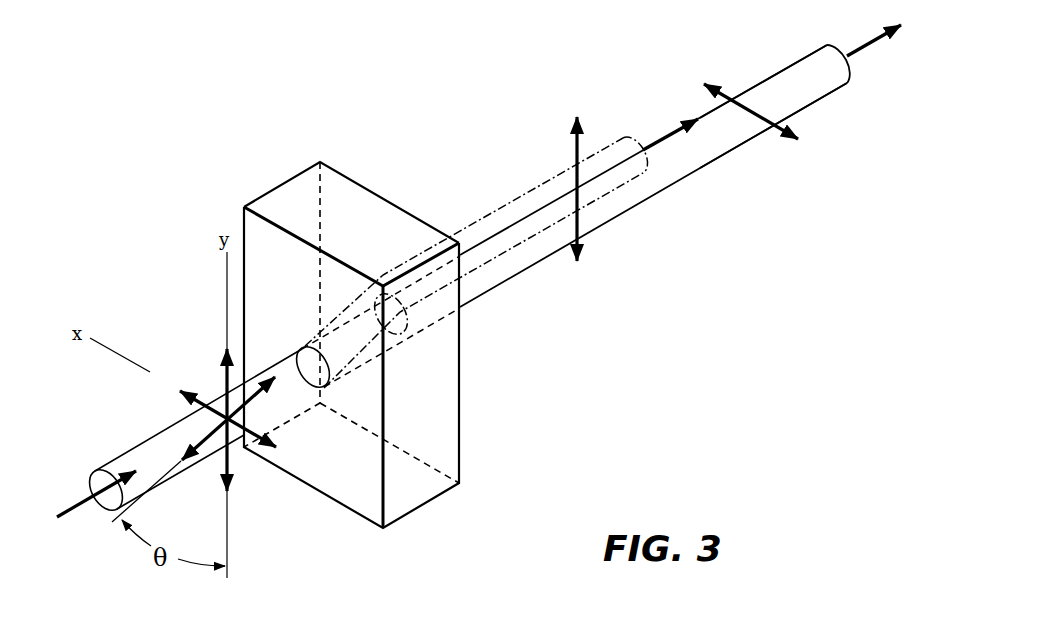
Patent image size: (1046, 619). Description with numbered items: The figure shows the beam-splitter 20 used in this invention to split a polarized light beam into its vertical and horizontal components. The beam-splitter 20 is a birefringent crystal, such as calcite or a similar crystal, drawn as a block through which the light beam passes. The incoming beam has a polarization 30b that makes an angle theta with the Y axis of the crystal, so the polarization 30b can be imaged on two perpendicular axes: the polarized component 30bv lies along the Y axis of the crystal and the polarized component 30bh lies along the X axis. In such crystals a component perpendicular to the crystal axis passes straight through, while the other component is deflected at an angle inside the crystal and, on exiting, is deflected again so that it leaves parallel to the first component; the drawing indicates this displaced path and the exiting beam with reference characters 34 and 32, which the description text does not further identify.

The beam-splitter 20 is at (292, 193).
The polarization 30b is at (192, 437).
The polarized component 30bv is at (223, 373).
The polarized component 30bh is at (186, 396).
The output element 32 is at (783, 75).
The phantom beam position 34 is at (543, 193).